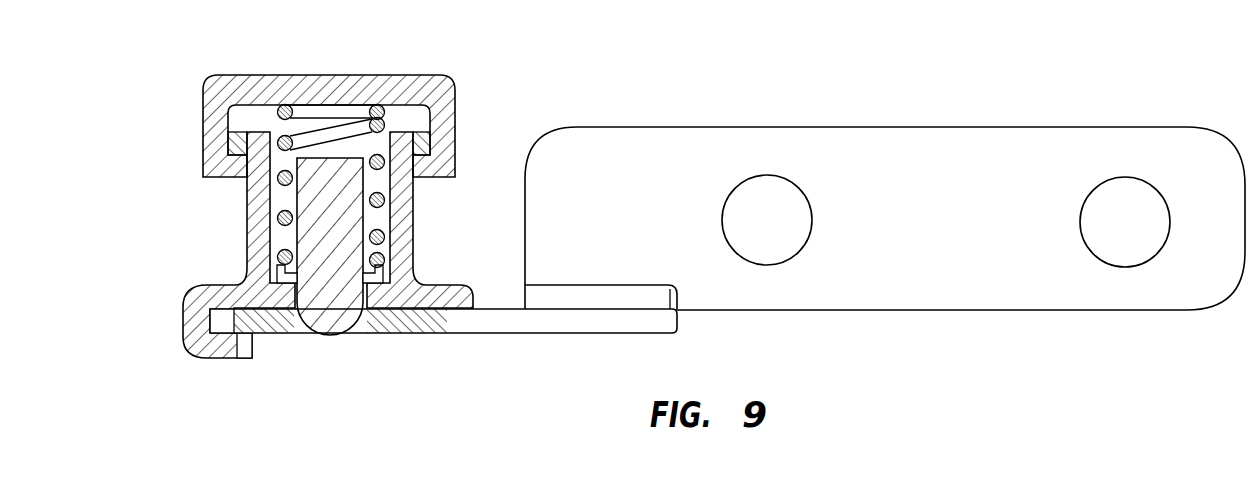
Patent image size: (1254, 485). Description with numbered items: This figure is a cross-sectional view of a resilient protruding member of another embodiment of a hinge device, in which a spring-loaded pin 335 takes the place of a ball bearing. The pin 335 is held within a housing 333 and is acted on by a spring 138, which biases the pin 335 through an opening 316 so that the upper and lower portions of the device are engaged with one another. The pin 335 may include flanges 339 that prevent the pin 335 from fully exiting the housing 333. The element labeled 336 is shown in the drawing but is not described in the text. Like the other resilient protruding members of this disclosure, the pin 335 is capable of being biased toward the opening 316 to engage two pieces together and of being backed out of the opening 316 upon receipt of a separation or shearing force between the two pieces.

The spring 138 is at (346, 132).
The housing 333 is at (247, 215).
The flanges 339 is at (280, 268).
The bushing 336 is at (294, 333).
The spring-loaded pin 335 is at (337, 318).
The opening 316 is at (380, 331).